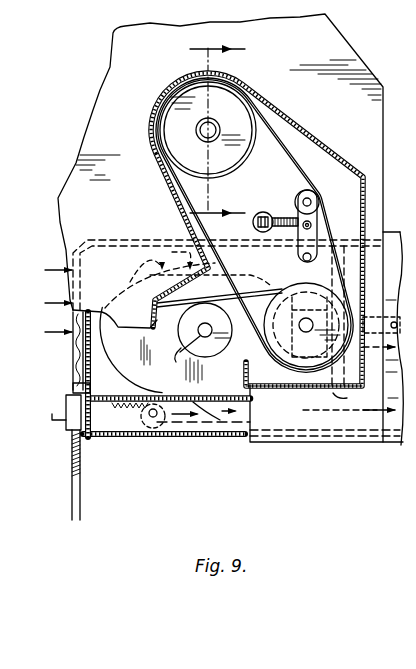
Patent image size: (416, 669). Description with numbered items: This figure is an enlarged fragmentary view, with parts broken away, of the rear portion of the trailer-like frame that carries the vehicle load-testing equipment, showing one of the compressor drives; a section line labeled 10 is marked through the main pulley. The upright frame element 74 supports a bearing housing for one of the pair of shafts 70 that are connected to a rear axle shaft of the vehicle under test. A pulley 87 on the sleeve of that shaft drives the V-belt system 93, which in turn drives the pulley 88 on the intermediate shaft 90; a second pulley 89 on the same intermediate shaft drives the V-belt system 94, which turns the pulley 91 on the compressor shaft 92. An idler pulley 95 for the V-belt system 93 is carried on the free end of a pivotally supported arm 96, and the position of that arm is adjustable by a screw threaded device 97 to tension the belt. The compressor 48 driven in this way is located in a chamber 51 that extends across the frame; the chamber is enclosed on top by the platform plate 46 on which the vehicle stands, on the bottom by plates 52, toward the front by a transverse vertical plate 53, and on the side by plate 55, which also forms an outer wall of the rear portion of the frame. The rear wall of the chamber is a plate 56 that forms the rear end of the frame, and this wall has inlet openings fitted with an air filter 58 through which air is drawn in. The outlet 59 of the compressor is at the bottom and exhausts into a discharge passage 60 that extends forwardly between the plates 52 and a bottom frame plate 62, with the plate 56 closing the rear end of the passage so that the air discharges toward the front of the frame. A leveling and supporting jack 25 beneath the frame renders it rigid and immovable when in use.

The section line 10- 10 is at (196, 135).
The leveling and supporting jack 25 is at (80, 470).
The platform plate 46 is at (117, 240).
The air compressor 48 is at (235, 398).
The chamber 51 is at (117, 388).
The bottom plates 52 is at (290, 396).
The transverse vertical plate 53 is at (337, 263).
The side plate 55 is at (355, 423).
The rear wall plate 56 is at (98, 376).
The air filter 58 is at (80, 368).
The compressor outlet 59 is at (157, 395).
The discharge passage 60 is at (207, 420).
The bottom frame plate 62 is at (156, 437).
The shaft 70 is at (222, 122).
The upright frame element 74 is at (352, 48).
The pulley 87 is at (170, 122).
The pulley 88 is at (268, 344).
The pulley 89 is at (292, 360).
The intermediate shaft 90 is at (306, 318).
The pulley 91 is at (186, 343).
The compressor shaft 92 is at (186, 343).
The V-belt system 93 is at (273, 133).
The V-belt system 94 is at (257, 297).
The idler pulley 95 is at (300, 193).
The pivotally supported arm 96 is at (317, 230).
The screw threaded device 97 is at (281, 216).